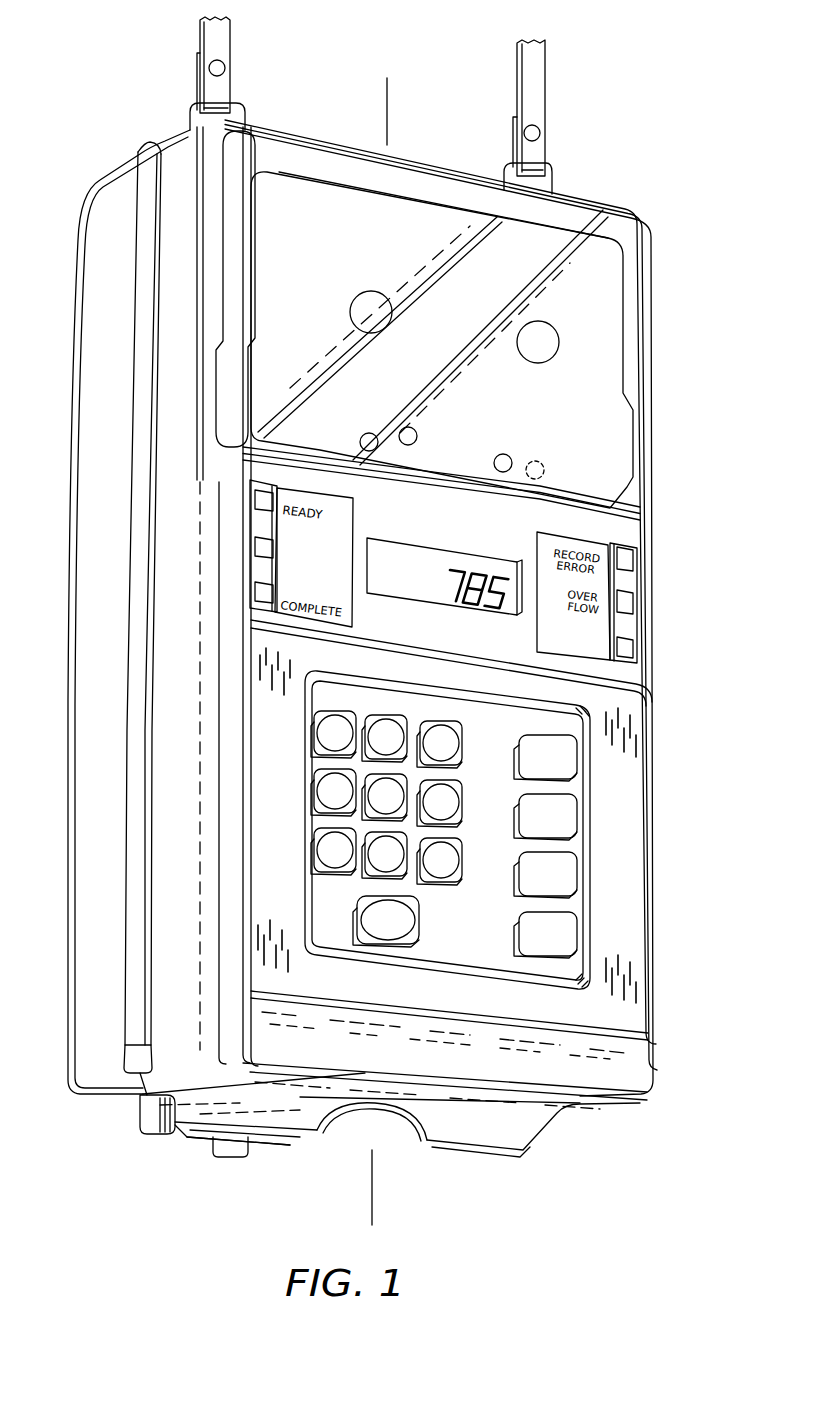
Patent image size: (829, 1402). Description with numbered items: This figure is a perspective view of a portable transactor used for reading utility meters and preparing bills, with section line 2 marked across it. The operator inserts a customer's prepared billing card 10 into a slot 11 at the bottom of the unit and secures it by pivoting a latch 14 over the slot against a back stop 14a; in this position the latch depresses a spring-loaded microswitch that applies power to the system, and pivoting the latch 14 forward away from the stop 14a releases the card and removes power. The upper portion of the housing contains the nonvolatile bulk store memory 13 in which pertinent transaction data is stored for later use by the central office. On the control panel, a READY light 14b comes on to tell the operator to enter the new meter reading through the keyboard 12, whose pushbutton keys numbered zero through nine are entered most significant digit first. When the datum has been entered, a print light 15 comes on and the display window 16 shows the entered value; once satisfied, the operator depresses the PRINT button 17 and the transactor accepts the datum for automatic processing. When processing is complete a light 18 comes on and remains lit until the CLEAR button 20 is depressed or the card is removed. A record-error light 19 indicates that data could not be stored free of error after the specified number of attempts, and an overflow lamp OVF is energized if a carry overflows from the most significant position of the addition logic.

The section line 2- 2 is at (393, 95).
The billing card 10 is at (337, 1117).
The slot 11 is at (519, 1151).
The keyboard 12 is at (318, 872).
The nonvolatile bulk store memory 13 is at (597, 346).
The latch 14 is at (230, 1148).
The back stop 14a is at (280, 1140).
The READY light 14b is at (260, 496).
The print light 15 is at (265, 552).
The display window 16 is at (440, 572).
The PRINT button 17 is at (570, 928).
The light 18 is at (265, 600).
The record-error light 19 is at (624, 558).
The CLEAR button 20 is at (568, 802).
The overflow lamp OVF is at (626, 602).